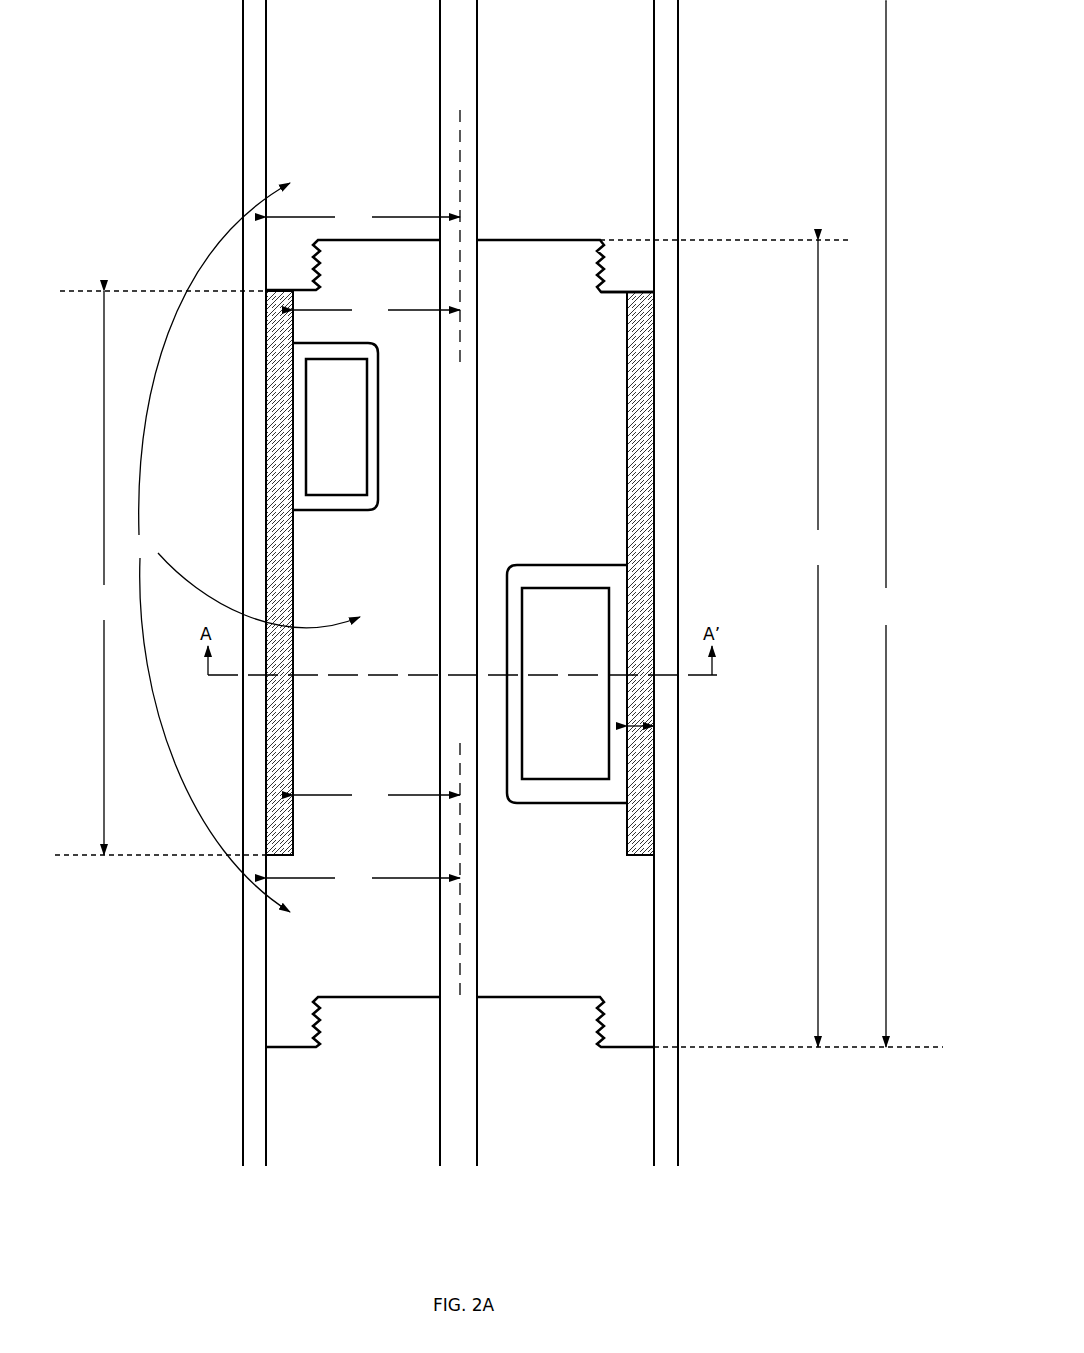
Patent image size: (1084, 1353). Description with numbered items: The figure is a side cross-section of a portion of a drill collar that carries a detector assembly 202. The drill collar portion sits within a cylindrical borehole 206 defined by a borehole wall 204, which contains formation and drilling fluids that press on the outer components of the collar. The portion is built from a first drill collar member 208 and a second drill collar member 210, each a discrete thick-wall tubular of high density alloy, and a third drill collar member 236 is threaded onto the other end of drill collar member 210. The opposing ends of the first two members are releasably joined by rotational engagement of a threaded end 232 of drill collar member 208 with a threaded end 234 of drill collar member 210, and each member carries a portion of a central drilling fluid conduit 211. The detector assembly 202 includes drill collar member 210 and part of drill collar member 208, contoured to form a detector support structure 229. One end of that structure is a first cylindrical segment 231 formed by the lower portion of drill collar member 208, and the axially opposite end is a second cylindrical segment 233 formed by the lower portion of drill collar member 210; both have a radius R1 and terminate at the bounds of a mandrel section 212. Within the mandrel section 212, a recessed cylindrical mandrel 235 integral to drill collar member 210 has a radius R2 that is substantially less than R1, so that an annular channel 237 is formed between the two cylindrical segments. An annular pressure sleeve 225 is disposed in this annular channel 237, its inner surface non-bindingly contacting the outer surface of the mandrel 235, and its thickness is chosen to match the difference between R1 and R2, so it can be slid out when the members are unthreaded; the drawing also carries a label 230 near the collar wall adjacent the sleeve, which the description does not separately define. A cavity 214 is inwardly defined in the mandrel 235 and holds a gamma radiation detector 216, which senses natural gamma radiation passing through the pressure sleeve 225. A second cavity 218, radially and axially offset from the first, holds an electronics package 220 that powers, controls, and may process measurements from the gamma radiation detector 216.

The detector assembly 202 is at (888, 524).
The borehole wall 204 is at (680, 60).
The borehole 206 is at (663, 117).
The first drill collar member 208 is at (590, 143).
The second drill collar member 210 is at (771, 643).
The drilling fluid conduit 211 is at (440, 97).
The mandrel section 212 is at (174, 573).
The cavity 214 is at (563, 572).
The gamma radiation detector 216 is at (572, 780).
The cavity 218 is at (370, 388).
The electronics package 220 is at (327, 495).
The annular pressure sleeve 225 is at (283, 572).
The detector support structure 229 is at (243, 547).
The inner wall of tube 230 is at (265, 388).
The first cylindrical segment 231 is at (275, 168).
The threaded end 232 is at (565, 265).
The second cylindrical segment 233 is at (277, 960).
The threaded end 234 is at (637, 273).
The recessed cylindrical mandrel 235 is at (547, 470).
The third drill collar member 236 is at (328, 1123).
The annular channel 237 is at (640, 732).
The radius R1 is at (363, 547).
The radius R2 is at (376, 552).